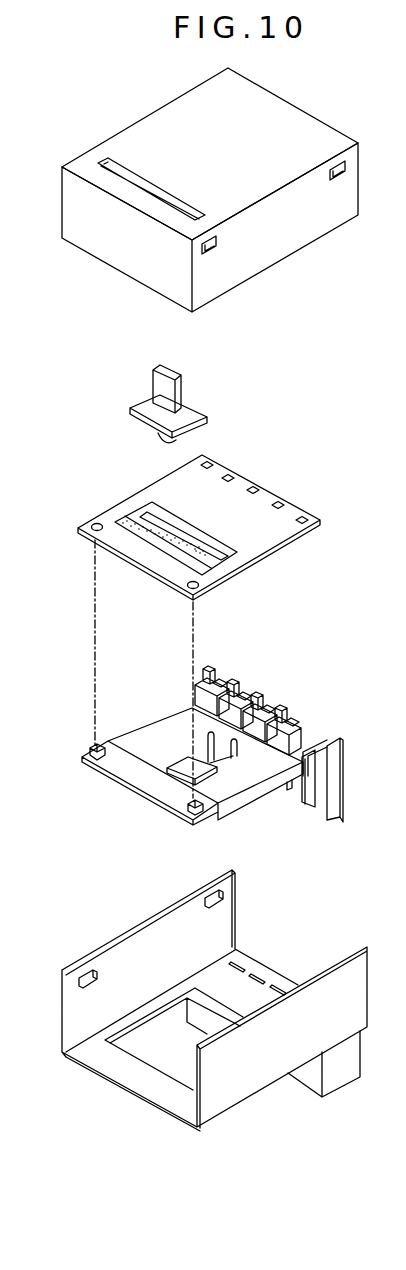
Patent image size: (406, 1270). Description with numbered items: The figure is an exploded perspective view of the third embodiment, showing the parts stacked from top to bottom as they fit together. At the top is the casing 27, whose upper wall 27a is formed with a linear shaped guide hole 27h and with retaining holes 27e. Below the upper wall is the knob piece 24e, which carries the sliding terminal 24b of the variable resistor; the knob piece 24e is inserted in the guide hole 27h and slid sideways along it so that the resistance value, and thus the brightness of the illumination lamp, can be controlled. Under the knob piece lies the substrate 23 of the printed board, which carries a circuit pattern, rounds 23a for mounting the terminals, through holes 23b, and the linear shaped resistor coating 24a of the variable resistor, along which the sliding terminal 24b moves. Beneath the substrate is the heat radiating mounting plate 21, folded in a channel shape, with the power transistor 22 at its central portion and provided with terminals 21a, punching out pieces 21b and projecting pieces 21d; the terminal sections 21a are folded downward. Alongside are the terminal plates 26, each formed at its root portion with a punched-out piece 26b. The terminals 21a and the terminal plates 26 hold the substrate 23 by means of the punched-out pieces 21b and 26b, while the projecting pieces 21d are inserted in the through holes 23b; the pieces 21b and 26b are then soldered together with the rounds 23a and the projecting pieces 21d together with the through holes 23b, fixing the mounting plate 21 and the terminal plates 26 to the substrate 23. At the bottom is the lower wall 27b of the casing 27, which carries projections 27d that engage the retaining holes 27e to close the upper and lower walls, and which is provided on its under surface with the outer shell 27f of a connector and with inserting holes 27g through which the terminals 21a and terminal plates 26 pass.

The casing 27 is at (157, 110).
The upper wall 27a is at (255, 118).
The guide hole 27h is at (152, 190).
The retaining holes 27e is at (218, 248).
The knob piece 24e is at (178, 388).
The sliding terminal 24b is at (160, 438).
The substrate 23 is at (187, 492).
The rounds 23a is at (283, 503).
The through holes 23b is at (92, 521).
The resistor coating 24a is at (208, 570).
The heat radiating mounting plate 21 is at (243, 788).
The projecting pieces 21d is at (90, 745).
The punching out pieces 21b is at (313, 730).
The terminals 21a is at (333, 756).
The power transistor 22 is at (182, 768).
The terminal plates 26 is at (312, 794).
The punched-out pieces 26b is at (268, 703).
The lower wall 27b is at (173, 990).
The projections 27d is at (225, 895).
The inserting holes 27g is at (242, 965).
The outer shell 27f is at (315, 1078).